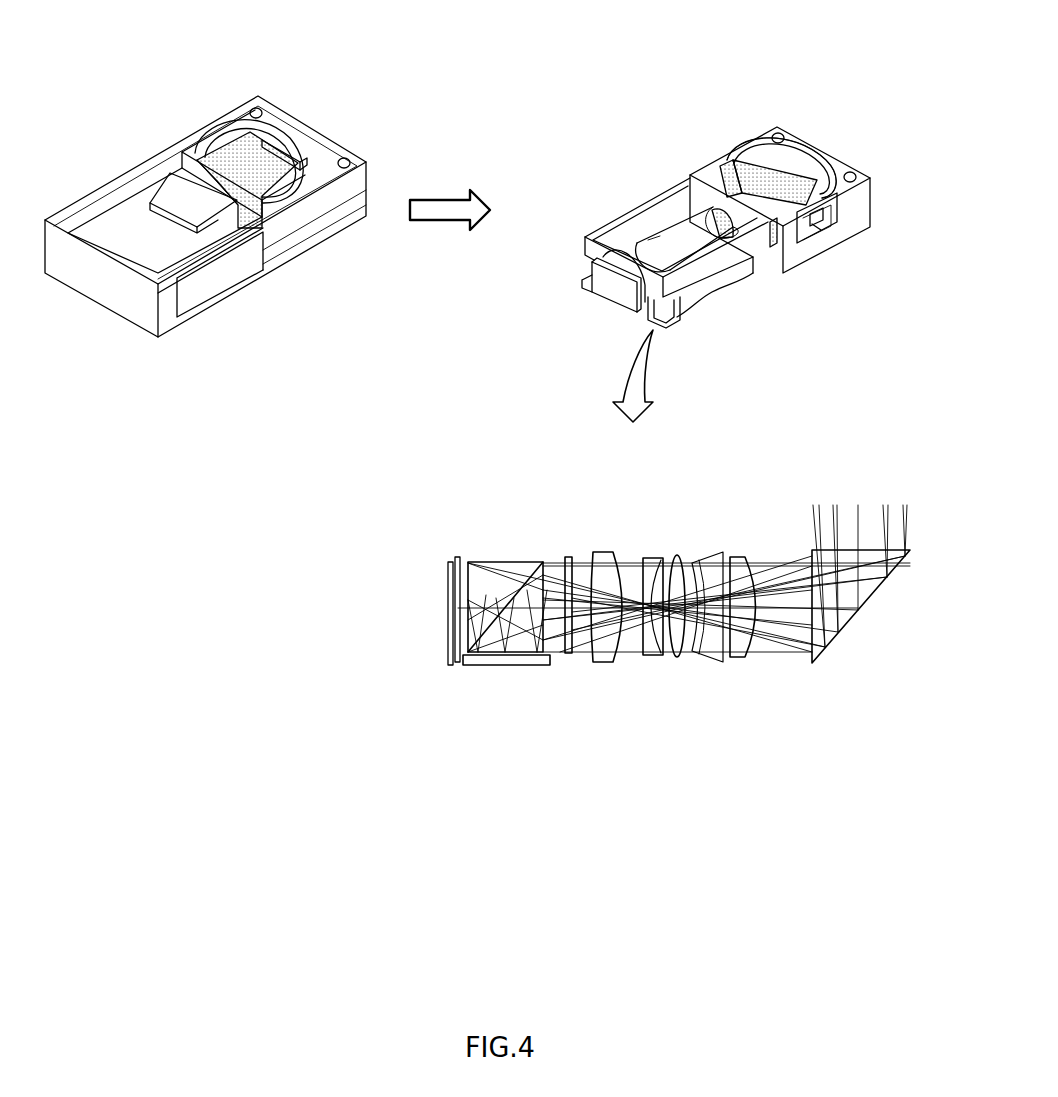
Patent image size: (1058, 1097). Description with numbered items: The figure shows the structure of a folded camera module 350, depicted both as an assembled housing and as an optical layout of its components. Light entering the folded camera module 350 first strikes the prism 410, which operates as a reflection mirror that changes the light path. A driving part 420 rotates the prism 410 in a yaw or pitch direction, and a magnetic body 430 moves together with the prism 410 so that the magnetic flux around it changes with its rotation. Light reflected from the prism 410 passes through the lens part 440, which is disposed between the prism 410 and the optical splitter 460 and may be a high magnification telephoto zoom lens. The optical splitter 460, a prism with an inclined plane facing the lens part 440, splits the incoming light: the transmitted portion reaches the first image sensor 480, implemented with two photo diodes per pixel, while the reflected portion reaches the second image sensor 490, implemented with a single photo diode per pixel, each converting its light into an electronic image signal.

The folded camera module 350 is at (281, 70).
The prism 410 is at (230, 165).
The driving part 420 is at (823, 217).
The magnetic body 430 is at (820, 158).
The lens part 440 is at (763, 542).
The optical splitter 460 is at (537, 570).
The first image sensor 480 is at (602, 277).
The second image sensor 490 is at (508, 667).